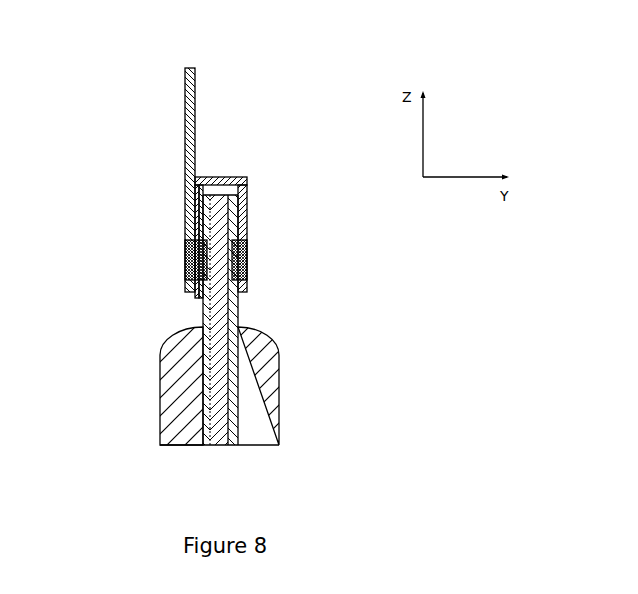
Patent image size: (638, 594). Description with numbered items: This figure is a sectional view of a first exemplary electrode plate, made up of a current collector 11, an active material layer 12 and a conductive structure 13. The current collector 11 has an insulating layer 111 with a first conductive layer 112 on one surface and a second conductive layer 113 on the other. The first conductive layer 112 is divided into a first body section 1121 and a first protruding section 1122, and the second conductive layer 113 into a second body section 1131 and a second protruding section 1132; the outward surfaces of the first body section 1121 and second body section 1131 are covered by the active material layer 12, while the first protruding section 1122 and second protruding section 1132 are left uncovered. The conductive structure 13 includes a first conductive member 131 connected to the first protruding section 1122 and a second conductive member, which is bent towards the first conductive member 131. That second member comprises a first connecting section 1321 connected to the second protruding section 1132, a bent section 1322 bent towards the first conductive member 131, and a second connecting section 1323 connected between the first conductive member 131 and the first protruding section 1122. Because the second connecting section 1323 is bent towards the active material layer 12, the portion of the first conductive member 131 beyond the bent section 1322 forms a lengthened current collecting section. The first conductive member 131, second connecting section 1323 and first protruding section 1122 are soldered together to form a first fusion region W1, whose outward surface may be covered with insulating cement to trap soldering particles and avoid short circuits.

The current collector 11 is at (222, 349).
The insulating layer 111 is at (218, 446).
The first conductive layer 112 is at (150, 320).
The first body section 1121 is at (203, 347).
The first protruding section 1122 is at (203, 310).
The second conductive layer 113 is at (287, 320).
The second body section 1131 is at (238, 352).
The second protruding section 1132 is at (238, 310).
The active material layer 12 is at (163, 413).
The conductive structure 13 is at (213, 170).
The first conductive member 131 is at (185, 130).
The first connecting section 1321 is at (247, 215).
The bent section 1322 is at (220, 178).
The second connecting section 1323 is at (195, 207).
The first fusion region W1 is at (185, 262).